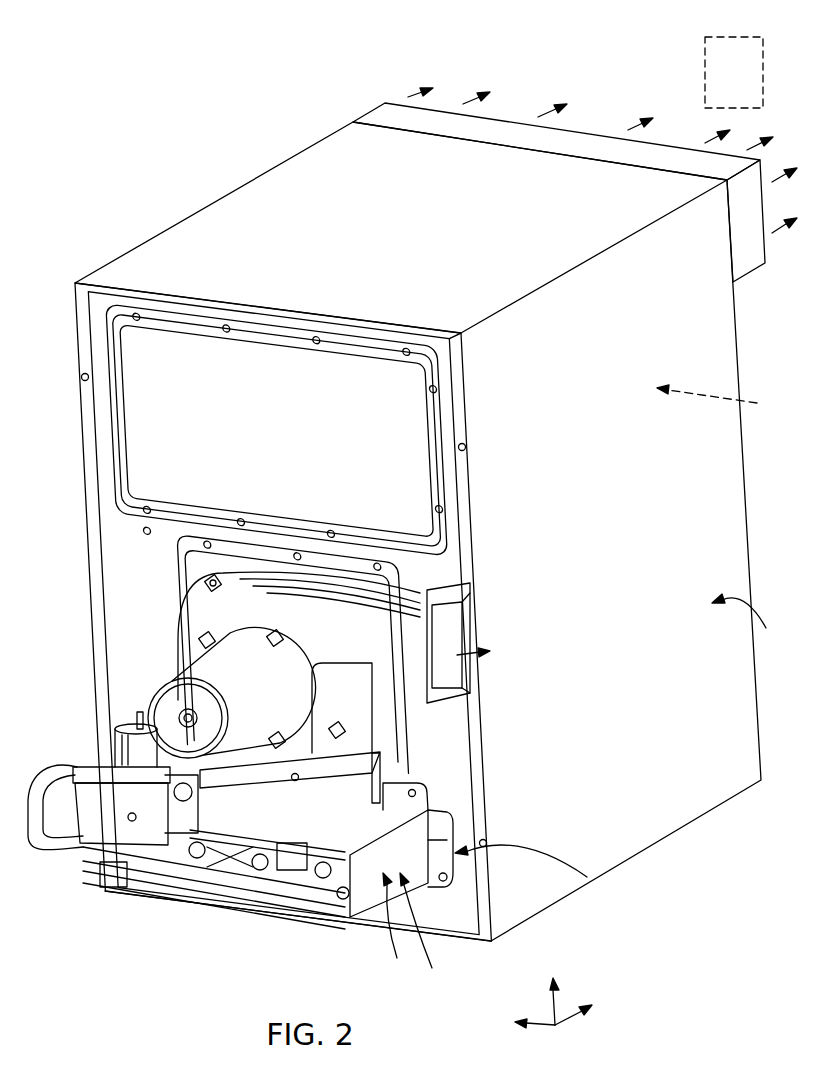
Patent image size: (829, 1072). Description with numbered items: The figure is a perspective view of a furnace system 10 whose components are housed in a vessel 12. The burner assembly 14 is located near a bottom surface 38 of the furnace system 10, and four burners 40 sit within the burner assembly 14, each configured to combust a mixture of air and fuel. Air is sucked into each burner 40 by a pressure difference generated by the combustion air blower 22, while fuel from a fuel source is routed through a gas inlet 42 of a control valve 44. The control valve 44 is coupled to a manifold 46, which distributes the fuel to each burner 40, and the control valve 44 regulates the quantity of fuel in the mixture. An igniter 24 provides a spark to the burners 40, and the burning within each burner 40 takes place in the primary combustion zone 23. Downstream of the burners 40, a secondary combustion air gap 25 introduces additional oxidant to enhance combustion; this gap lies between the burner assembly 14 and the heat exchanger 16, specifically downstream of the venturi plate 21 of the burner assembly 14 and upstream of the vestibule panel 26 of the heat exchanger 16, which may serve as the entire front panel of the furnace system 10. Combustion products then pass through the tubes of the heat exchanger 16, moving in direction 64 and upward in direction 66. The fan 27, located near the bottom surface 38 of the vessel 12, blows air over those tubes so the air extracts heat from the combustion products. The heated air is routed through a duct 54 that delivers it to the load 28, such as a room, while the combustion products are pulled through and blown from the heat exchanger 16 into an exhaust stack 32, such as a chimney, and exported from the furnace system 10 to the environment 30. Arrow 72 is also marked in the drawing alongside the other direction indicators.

The furnace system 10 is at (365, 60).
The vessel 12 is at (318, 142).
The burner assembly 14 is at (389, 896).
The heat exchanger 16 is at (721, 400).
The venturi plate 21 is at (440, 848).
The combustion air blower 22 is at (193, 632).
The primary combustion zone 23 is at (423, 933).
The igniter 24 is at (395, 785).
The secondary combustion air gap 25 is at (535, 884).
The vestibule panel 26 is at (433, 802).
The fan 27 is at (748, 620).
The load 28 is at (745, 36).
The environment 30 is at (526, 83).
The exhaust stack 32 is at (473, 635).
The bottom surface 38 is at (533, 920).
The burners 40 is at (130, 850).
The gas inlet 42 is at (200, 790).
The control valve 44 is at (95, 835).
The manifold 46 is at (30, 833).
The duct 54 is at (372, 108).
The direction 64 is at (570, 1022).
The direction 66 is at (559, 1000).
The z axis 72 is at (540, 1031).